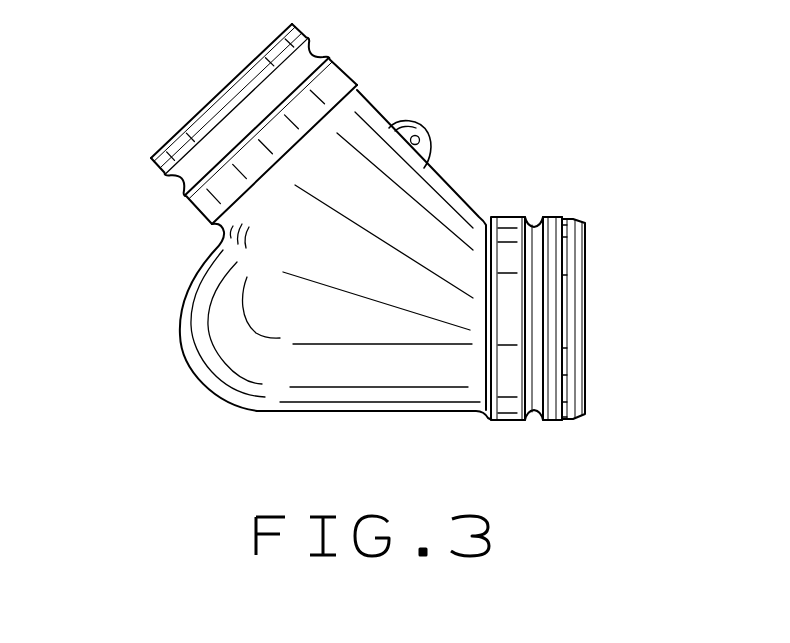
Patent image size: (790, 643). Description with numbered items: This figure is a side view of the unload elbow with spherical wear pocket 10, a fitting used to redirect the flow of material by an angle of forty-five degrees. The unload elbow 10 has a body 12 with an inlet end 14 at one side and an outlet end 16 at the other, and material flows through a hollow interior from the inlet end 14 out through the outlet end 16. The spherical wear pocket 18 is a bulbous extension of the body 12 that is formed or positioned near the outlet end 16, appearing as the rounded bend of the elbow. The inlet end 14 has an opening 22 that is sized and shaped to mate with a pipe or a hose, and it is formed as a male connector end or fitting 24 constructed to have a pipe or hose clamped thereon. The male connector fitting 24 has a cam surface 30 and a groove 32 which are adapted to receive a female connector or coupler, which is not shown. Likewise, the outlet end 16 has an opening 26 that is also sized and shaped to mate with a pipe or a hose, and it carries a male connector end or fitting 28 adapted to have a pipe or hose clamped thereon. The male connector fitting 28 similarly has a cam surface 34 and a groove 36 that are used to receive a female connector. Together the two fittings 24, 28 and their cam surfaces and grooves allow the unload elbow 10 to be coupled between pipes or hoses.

The unload elbow with spherical wear pocket 10 is at (390, 94).
The body 12 is at (412, 185).
The inlet end 14 is at (606, 315).
The outlet end 16 is at (206, 78).
The spherical wear pocket 18 is at (190, 363).
The opening 22 is at (585, 371).
The male connector end or fitting 24 is at (561, 160).
The opening 26 is at (158, 149).
The male connector end or fitting 28 is at (146, 216).
The cam surface 30 is at (508, 228).
The groove 32 is at (543, 225).
The cam surface 34 is at (197, 217).
The groove 36 is at (183, 180).